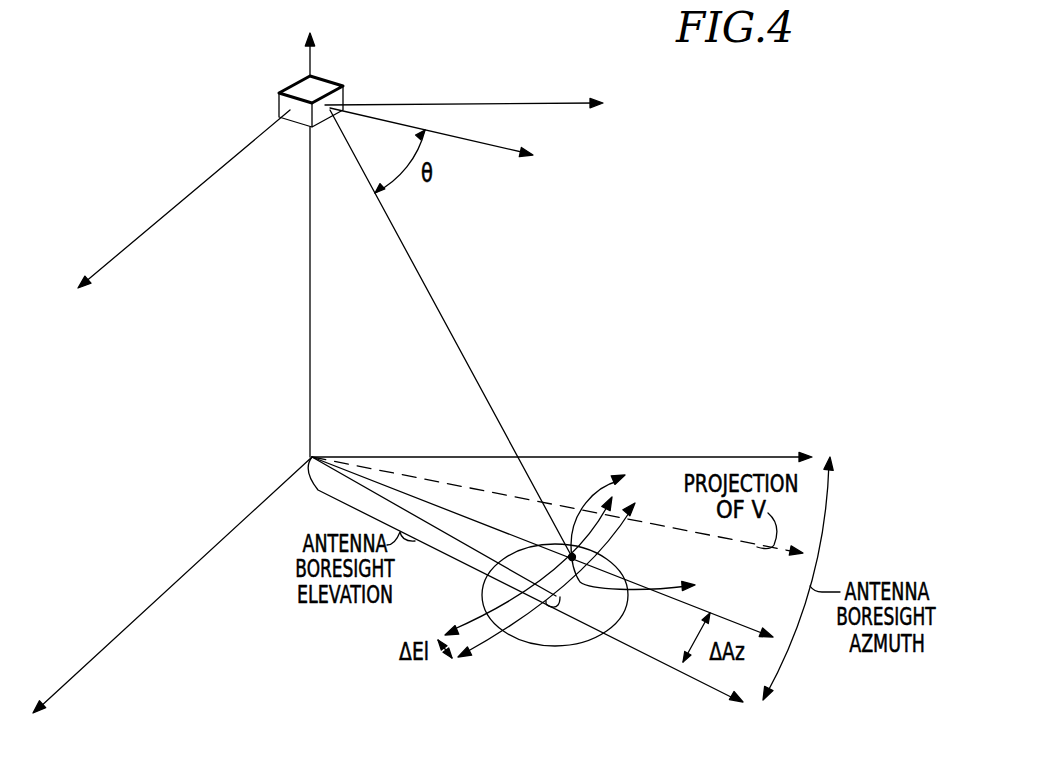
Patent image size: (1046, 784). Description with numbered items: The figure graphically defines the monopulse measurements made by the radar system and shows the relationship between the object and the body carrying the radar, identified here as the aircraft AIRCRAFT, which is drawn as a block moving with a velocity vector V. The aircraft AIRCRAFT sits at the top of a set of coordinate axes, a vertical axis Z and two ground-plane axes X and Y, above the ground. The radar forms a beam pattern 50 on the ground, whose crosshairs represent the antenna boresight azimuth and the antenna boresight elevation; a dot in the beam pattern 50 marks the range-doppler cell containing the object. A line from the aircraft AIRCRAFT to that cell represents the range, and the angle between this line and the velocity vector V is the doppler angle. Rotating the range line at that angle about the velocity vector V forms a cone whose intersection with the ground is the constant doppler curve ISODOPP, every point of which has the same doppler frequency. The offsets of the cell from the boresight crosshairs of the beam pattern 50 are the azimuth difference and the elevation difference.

The beam pattern 50 is at (580, 646).
The aircraft AIRCRAFT is at (279, 94).
The constant doppler curve ISODOPP is at (590, 488).
The X axis X is at (175, 199).
The Y axis Y is at (464, 87).
The Z axis Z is at (297, 243).
The velocity vector V is at (446, 141).